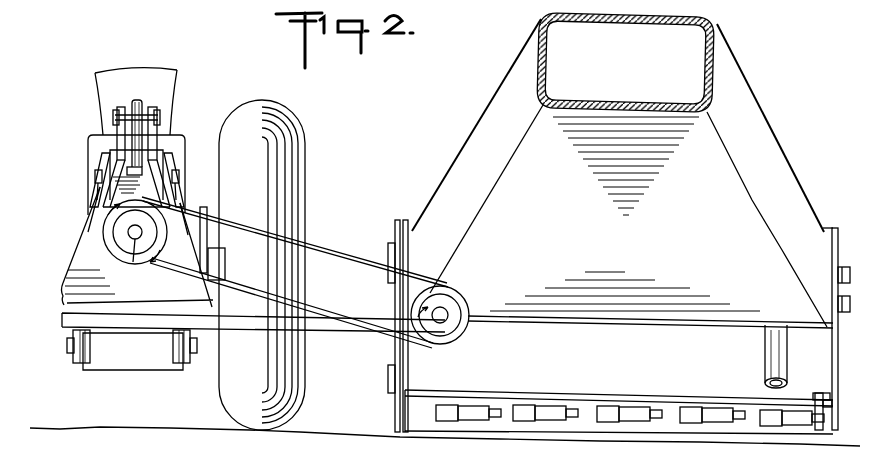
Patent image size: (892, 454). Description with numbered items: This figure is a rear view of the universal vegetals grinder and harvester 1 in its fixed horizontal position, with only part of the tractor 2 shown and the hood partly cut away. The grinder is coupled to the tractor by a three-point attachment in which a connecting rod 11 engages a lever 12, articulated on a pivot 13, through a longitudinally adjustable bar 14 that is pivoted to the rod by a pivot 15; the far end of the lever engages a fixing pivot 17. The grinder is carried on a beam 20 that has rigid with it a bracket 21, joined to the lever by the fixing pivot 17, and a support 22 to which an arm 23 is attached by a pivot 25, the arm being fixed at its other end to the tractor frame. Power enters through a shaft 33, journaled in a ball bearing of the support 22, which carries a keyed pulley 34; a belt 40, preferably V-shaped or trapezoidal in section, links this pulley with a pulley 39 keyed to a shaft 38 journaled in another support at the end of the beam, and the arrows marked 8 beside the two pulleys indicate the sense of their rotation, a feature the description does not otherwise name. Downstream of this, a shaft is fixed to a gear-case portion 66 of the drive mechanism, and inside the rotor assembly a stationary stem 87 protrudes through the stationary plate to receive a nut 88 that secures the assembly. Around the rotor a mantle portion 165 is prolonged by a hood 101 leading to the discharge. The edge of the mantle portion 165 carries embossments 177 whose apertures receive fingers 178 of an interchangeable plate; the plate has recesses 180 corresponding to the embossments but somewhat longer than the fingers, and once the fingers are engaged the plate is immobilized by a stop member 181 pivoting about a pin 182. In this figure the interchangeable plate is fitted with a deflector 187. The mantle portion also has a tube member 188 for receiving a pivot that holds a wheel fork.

The universal vegetals grinder and harvester 1 is at (452, 160).
The tractor 2 is at (189, 116).
The rotation arrow 8 is at (113, 226).
The connecting rod 11 is at (98, 136).
The lever 12 is at (80, 362).
The pivot 13 is at (170, 152).
The longitudinally adjustable bar 14 is at (92, 207).
The pivot 15 is at (178, 171).
The fixing pivot 17 is at (108, 350).
The beam 20 is at (247, 317).
The bracket 21 is at (170, 335).
The support 22 is at (77, 295).
The arm 23 is at (136, 100).
The pivot 25 is at (163, 132).
The shaft 33 is at (133, 240).
The pulley 34 is at (150, 250).
The shaft 38 is at (447, 312).
The pulley 39 is at (470, 313).
The belt 40 is at (330, 250).
The gear-case portion 66 is at (395, 380).
The stationary stem 87 is at (848, 270).
The nut 88 is at (846, 312).
The hood 101 is at (770, 137).
The mantle portion 165 is at (533, 346).
The embossment 177 is at (548, 410).
The finger 178 is at (655, 415).
The recess 180 is at (690, 418).
The stop member 181 is at (823, 397).
The pin 182 is at (832, 400).
The deflector 187 is at (407, 422).
The tube member 188 is at (772, 340).